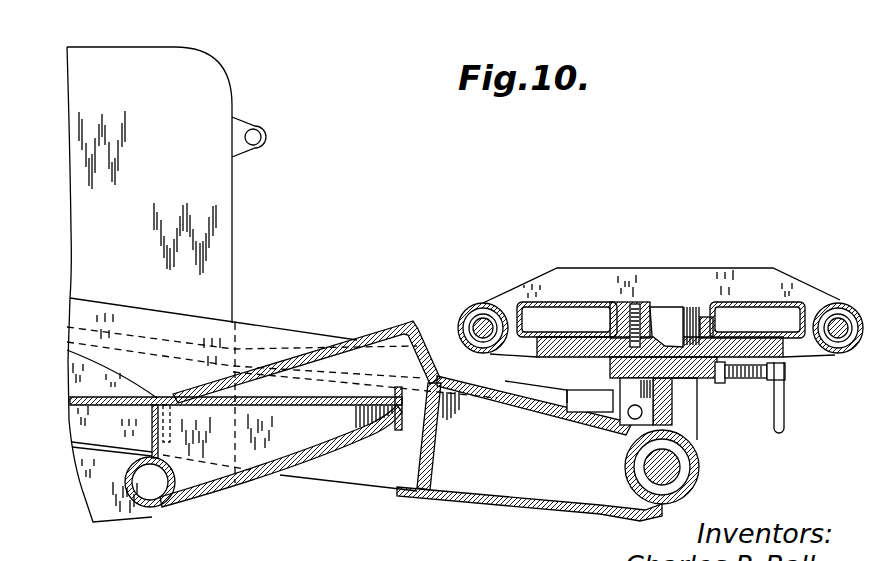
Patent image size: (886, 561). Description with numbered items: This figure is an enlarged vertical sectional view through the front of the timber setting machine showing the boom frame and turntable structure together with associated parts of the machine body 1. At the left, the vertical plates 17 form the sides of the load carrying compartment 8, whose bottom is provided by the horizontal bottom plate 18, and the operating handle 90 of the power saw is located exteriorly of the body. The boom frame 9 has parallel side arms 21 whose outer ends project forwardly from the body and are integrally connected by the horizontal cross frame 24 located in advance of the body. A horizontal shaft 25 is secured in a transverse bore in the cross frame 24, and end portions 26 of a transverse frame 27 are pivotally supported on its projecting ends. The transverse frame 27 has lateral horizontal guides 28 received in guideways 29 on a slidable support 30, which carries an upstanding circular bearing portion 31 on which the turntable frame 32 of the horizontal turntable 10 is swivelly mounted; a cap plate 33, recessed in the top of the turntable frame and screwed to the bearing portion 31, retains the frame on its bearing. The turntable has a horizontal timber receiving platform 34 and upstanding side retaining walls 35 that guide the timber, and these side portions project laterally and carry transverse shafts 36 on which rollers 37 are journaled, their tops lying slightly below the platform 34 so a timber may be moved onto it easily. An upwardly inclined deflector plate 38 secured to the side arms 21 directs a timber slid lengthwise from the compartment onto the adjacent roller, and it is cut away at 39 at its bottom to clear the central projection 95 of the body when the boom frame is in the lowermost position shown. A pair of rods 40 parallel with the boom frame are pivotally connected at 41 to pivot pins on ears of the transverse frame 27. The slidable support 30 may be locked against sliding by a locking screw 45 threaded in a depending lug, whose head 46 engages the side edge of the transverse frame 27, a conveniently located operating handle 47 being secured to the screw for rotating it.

The body 1 is at (125, 46).
The vertical plates 17 is at (154, 60).
The load carrying compartment 8 is at (183, 112).
The operating handle 90 is at (251, 128).
The horizontal bottom plate 18 is at (103, 398).
The boom frame 9 is at (279, 328).
The side arms 21 is at (234, 330).
The cut away 39 is at (174, 386).
The central projection 95 is at (324, 462).
The deflector plate 38 is at (371, 336).
The rods 40 is at (508, 387).
The cross frame 24 is at (691, 485).
The horizontal shaft 25 is at (661, 485).
The turntable 10 is at (690, 267).
The side retaining walls 35 is at (756, 281).
The circular bearing portion 31 is at (676, 327).
The cap plate 33 is at (661, 308).
The platform 34 is at (593, 302).
The guideways 29 is at (613, 378).
The turntable frame 32 is at (779, 303).
The rollers 37 is at (481, 305).
The transverse shafts 36 is at (478, 322).
The slidable support 30 is at (788, 358).
The end portions 26 is at (698, 437).
The pivotal connection 41 is at (634, 416).
The transverse frame 27 is at (614, 394).
The lateral horizontal guides 28 is at (609, 375).
The head 46 is at (716, 385).
The locking screw 45 is at (758, 385).
The operating handle 47 is at (786, 415).